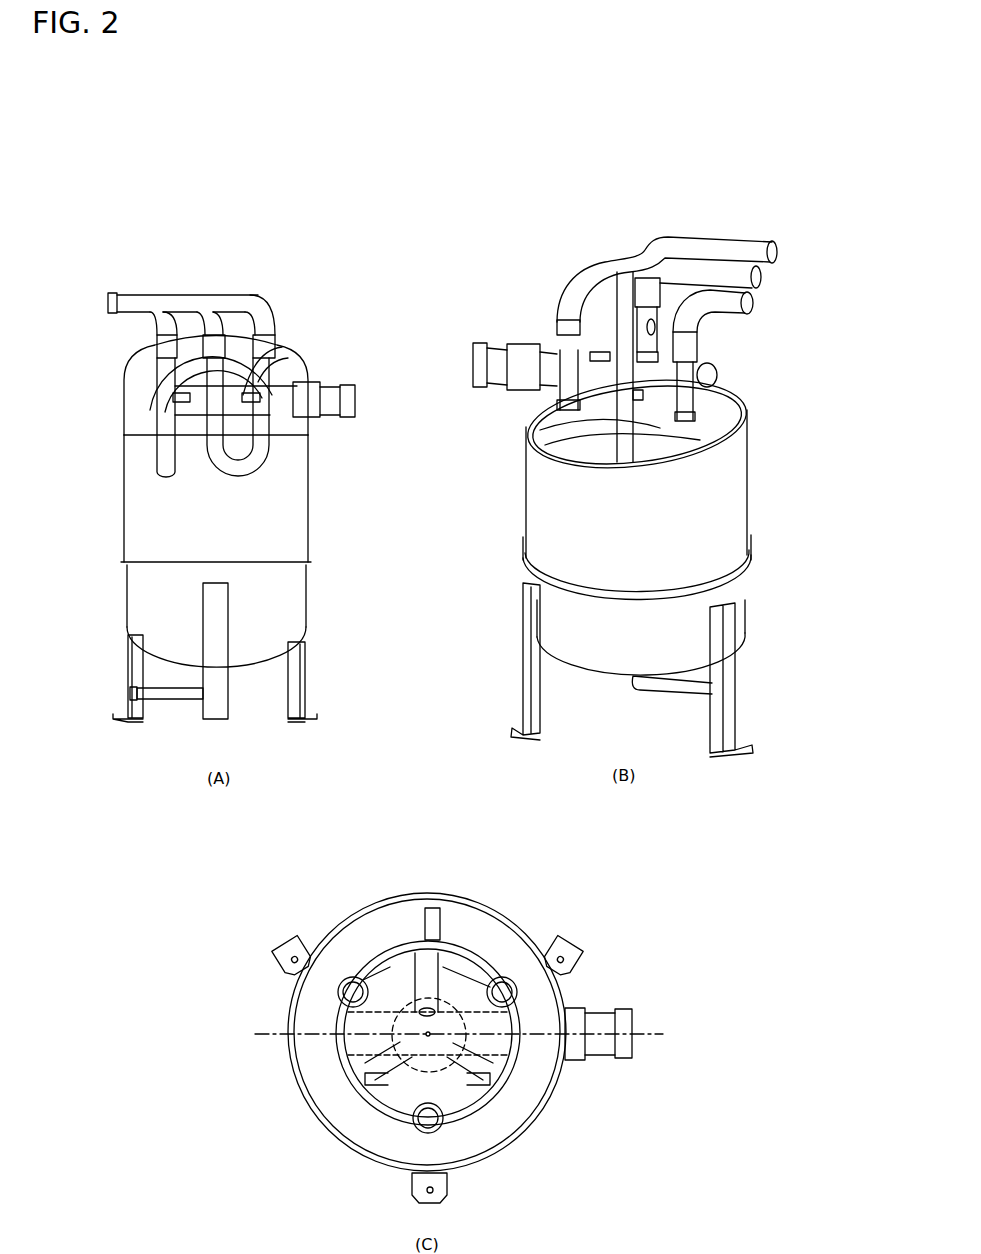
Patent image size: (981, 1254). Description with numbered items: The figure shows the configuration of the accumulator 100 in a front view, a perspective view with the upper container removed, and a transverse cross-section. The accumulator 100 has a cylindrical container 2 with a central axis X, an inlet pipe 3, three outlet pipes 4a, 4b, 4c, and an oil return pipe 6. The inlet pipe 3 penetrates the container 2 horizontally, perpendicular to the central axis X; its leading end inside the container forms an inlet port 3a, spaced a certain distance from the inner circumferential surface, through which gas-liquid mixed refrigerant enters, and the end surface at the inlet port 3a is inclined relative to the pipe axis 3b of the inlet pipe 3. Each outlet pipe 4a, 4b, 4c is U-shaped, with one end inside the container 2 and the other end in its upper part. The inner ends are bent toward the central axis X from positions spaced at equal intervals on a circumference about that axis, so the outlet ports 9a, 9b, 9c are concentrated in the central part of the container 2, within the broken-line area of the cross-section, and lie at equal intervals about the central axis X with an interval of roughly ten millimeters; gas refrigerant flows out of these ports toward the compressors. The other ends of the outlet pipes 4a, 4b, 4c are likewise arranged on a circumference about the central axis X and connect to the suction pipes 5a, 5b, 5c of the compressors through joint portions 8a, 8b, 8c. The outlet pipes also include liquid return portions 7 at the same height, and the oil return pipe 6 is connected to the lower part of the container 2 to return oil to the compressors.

The accumulator 100 is at (346, 231).
The cylindrical container 2 is at (272, 508).
The inlet pipe 3 is at (348, 390).
The inlet port 3a is at (717, 378).
The pipe axis 3b is at (660, 1040).
The outlet pipe 4a is at (158, 397).
The outlet pipe 4b is at (273, 382).
The outlet pipe 4c is at (150, 377).
The suction pipe 5a is at (205, 333).
The suction pipe 5b is at (258, 318).
The suction pipe 5c is at (160, 335).
The oil return pipe 6 is at (160, 688).
The liquid return portion 7 is at (252, 395).
The joint portion 8a is at (220, 345).
The joint portion 8b is at (273, 350).
The joint portion 8c is at (160, 353).
The outlet port 9a is at (590, 280).
The outlet port 9b is at (615, 330).
The outlet port 9c is at (648, 325).
The central axis X is at (440, 1060).